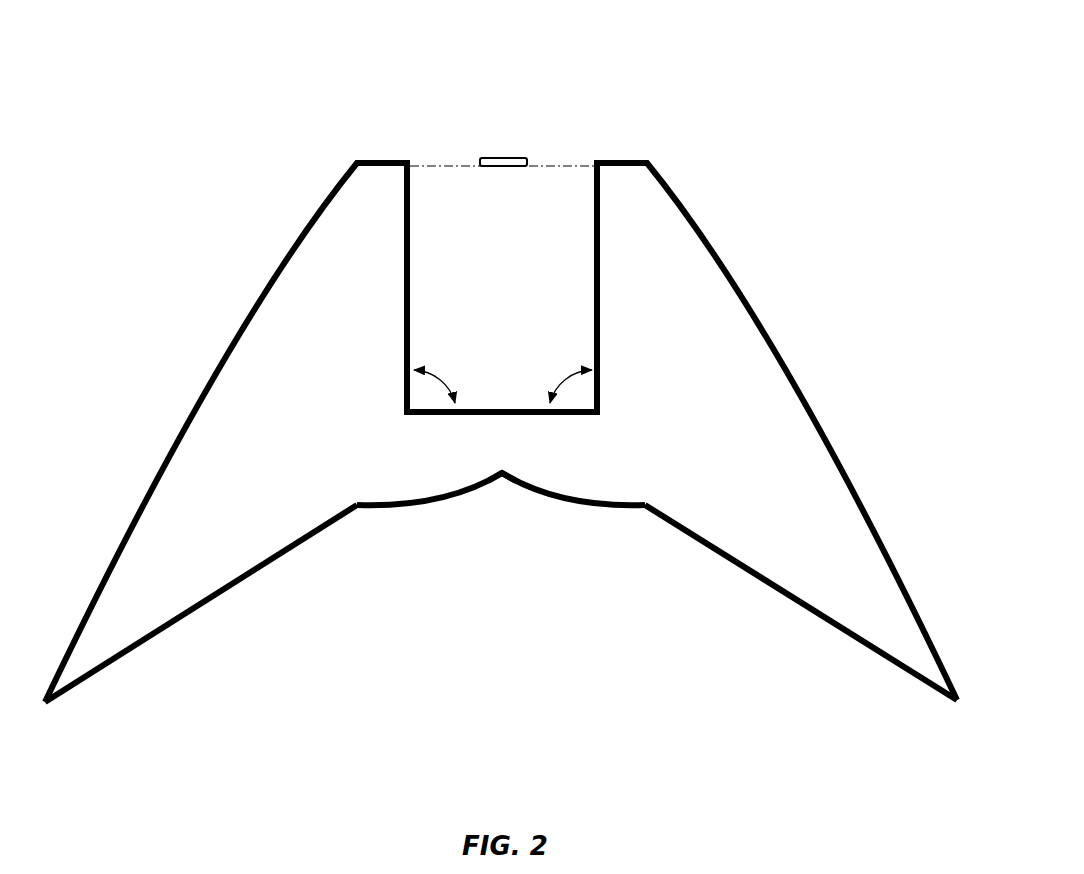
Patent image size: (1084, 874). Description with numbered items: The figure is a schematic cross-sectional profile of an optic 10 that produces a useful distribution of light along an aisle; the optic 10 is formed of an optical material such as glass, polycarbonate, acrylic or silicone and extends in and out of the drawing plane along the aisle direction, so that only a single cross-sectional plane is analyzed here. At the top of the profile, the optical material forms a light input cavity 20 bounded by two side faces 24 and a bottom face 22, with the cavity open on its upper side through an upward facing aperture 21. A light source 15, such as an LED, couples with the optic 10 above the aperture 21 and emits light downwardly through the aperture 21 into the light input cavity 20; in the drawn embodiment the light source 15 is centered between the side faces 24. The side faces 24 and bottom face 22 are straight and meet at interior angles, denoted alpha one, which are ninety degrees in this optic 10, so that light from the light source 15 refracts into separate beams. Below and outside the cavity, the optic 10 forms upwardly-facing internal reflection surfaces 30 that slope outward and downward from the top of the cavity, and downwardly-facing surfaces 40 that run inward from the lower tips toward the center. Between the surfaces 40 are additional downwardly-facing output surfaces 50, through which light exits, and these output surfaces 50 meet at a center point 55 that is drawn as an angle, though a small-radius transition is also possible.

The optic 10 is at (770, 86).
The light source 15 is at (501, 158).
The light input cavity 20 is at (459, 222).
The upward facing aperture 21 is at (549, 162).
The bottom face 22 is at (508, 403).
The side faces 24 is at (420, 265).
The internal reflection surfaces 30 is at (281, 237).
The downwardly-facing surfaces 40 is at (270, 569).
The downwardly-facing output surfaces 50 is at (431, 512).
The center point 55 is at (502, 483).